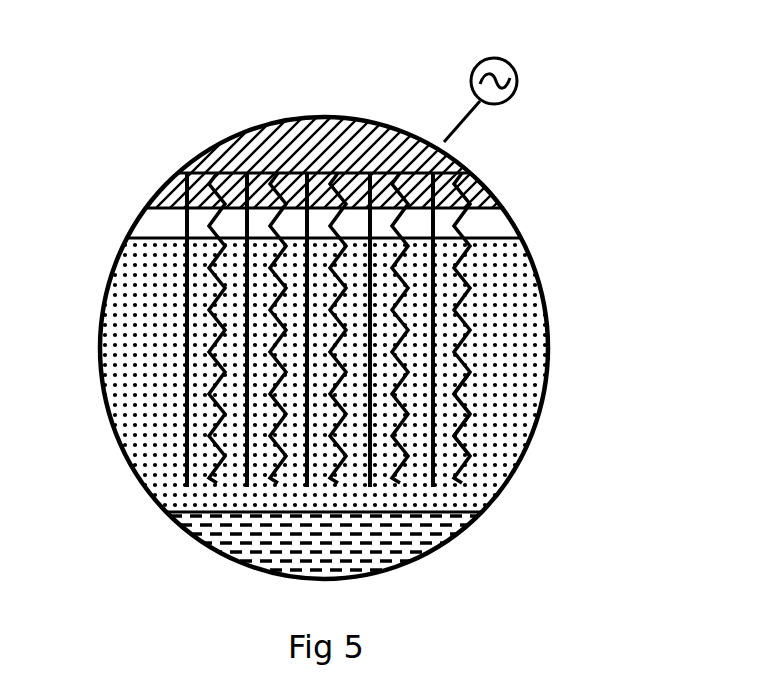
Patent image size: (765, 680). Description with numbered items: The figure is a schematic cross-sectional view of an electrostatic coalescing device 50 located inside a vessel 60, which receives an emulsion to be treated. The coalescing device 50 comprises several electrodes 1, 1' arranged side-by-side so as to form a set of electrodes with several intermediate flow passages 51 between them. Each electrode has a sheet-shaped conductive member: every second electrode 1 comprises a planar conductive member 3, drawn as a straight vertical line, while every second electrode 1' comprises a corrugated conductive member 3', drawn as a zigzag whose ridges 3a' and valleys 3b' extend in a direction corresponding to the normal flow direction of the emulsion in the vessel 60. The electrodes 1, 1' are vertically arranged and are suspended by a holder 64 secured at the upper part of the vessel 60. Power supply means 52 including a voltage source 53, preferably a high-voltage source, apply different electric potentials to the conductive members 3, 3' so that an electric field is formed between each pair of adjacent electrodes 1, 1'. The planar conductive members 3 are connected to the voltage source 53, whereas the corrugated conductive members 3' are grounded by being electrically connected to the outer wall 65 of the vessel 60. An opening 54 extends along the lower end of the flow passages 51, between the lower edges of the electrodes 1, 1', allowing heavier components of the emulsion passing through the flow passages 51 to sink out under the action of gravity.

The electrostatic coalescing device 50 is at (313, 96).
The holder 64 is at (238, 143).
The outer wall 65 is at (483, 181).
The flow passage 51 is at (462, 279).
The vessel 60 is at (522, 455).
The opening 54 is at (478, 471).
The electrode 1 is at (333, 390).
The electrode 1' is at (498, 351).
The planar conductive member 3 is at (414, 328).
The corrugated conductive member 3' is at (538, 328).
The ridges 3a' is at (531, 397).
The valleys 3b' is at (534, 435).
The voltage source 53 is at (512, 66).
The power supply means 52 is at (488, 130).